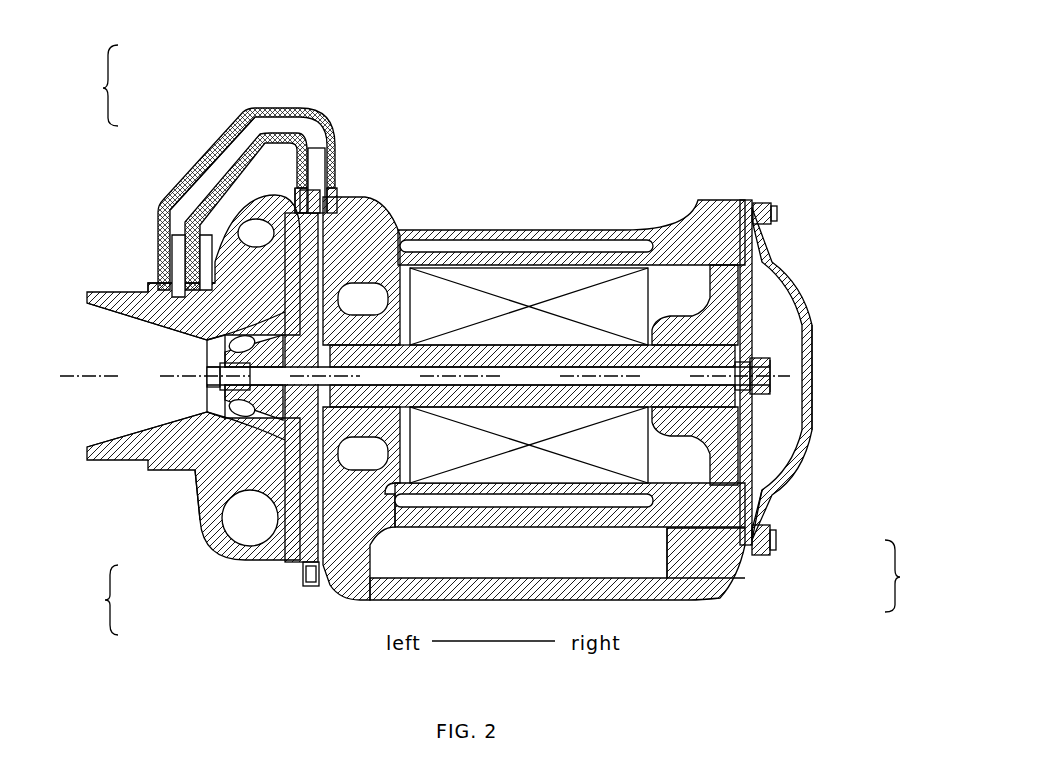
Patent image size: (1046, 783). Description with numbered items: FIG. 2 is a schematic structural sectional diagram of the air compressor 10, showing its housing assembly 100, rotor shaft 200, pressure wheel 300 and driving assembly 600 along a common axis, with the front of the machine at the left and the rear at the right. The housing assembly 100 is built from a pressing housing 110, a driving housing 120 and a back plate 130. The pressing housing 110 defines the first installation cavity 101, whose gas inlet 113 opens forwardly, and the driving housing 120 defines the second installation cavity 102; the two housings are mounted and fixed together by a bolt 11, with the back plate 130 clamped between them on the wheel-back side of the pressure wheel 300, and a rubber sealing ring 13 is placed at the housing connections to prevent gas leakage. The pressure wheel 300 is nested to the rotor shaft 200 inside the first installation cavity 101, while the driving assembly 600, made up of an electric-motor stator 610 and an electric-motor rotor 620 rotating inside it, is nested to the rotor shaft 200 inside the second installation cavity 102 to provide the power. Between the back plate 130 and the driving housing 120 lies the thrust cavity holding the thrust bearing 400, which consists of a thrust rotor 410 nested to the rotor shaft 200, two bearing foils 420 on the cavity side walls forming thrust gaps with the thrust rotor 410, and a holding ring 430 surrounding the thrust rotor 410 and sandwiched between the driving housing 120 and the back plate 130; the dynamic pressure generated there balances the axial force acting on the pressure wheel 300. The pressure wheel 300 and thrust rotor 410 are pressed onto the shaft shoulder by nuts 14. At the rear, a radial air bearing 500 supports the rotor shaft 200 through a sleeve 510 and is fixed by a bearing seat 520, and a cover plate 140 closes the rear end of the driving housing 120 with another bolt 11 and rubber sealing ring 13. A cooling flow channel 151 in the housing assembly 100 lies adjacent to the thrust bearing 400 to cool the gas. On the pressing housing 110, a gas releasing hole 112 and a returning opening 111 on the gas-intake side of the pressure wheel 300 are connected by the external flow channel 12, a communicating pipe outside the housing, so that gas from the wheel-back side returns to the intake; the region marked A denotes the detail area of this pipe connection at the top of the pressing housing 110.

The air compressor 10 is at (664, 127).
The bolt 11 is at (309, 584).
The external flow channel 12 is at (302, 112).
The rubber sealing ring 13 is at (337, 211).
The nut 14 is at (213, 397).
The housing assembly 100 is at (94, 600).
The first installation cavity 101 is at (205, 352).
The second installation cavity 102 is at (746, 242).
The pressing housing 110 is at (213, 540).
The returning opening 111 is at (158, 290).
The gas releasing hole 112 is at (335, 182).
The gas inlet 113 is at (112, 325).
The driving housing 120 is at (318, 562).
The back plate 130 is at (287, 556).
The cover plate 140 is at (805, 402).
The cooling flow channel 151 is at (366, 300).
The rotor shaft 200 is at (727, 337).
The pressure wheel 300 is at (243, 422).
The thrust bearing 400 is at (89, 85).
The thrust rotor 410 is at (255, 300).
The bearing foil 420 is at (275, 290).
The holding ring 430 is at (293, 240).
The radial air bearing 500 is at (756, 422).
The sleeve 510 is at (792, 424).
The bearing seat 520 is at (744, 442).
The driving assembly 600 is at (899, 576).
The electric-motor stator 610 is at (677, 528).
The electric-motor rotor 620 is at (776, 540).
The section A is at (232, 300).